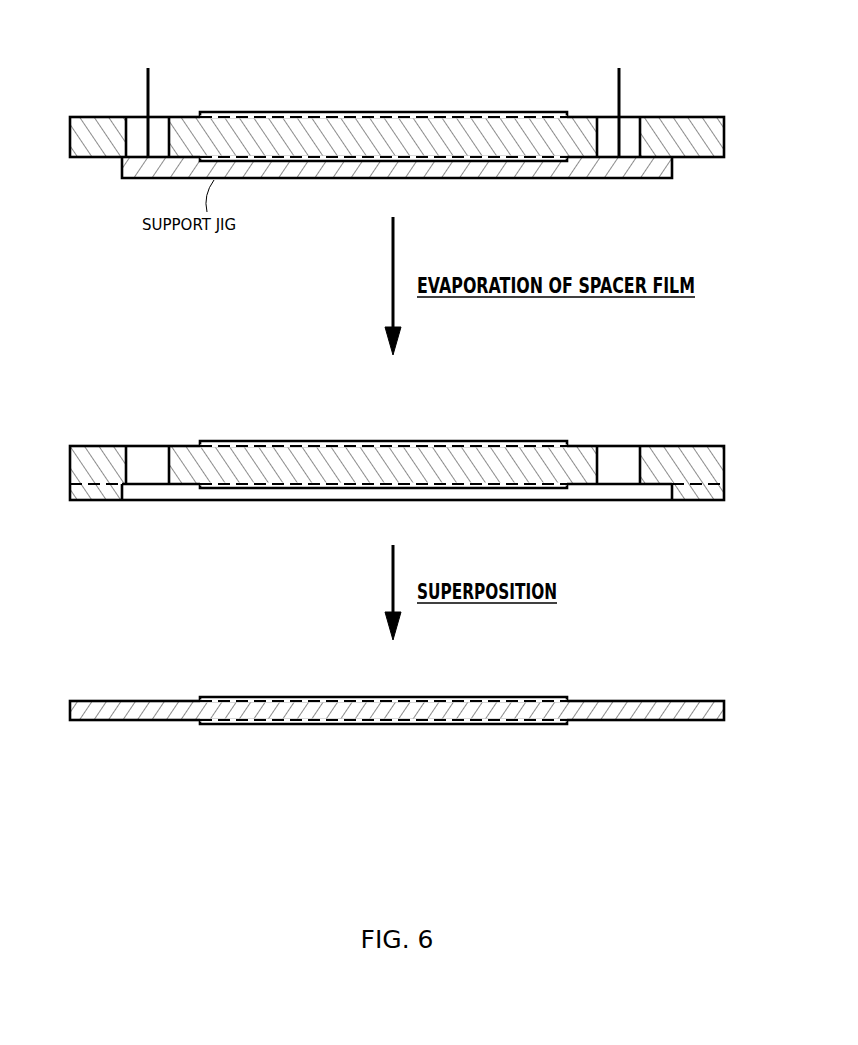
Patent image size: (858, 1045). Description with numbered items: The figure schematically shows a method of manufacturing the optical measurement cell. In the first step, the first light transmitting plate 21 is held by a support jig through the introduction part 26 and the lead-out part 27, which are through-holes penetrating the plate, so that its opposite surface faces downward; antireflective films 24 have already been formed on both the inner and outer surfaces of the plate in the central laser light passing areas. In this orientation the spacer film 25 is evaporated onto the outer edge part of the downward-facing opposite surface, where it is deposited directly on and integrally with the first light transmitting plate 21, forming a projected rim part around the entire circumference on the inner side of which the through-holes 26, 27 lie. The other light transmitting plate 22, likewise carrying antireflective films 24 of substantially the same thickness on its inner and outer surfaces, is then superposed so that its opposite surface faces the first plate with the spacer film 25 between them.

The first light transmitting plate 21 is at (724, 137).
The light transmitting plate 22 is at (724, 710).
The antireflective film 24 is at (298, 112).
The spacer film 25 is at (697, 502).
The introduction part 26 is at (609, 118).
The lead-out part 27 is at (161, 121).